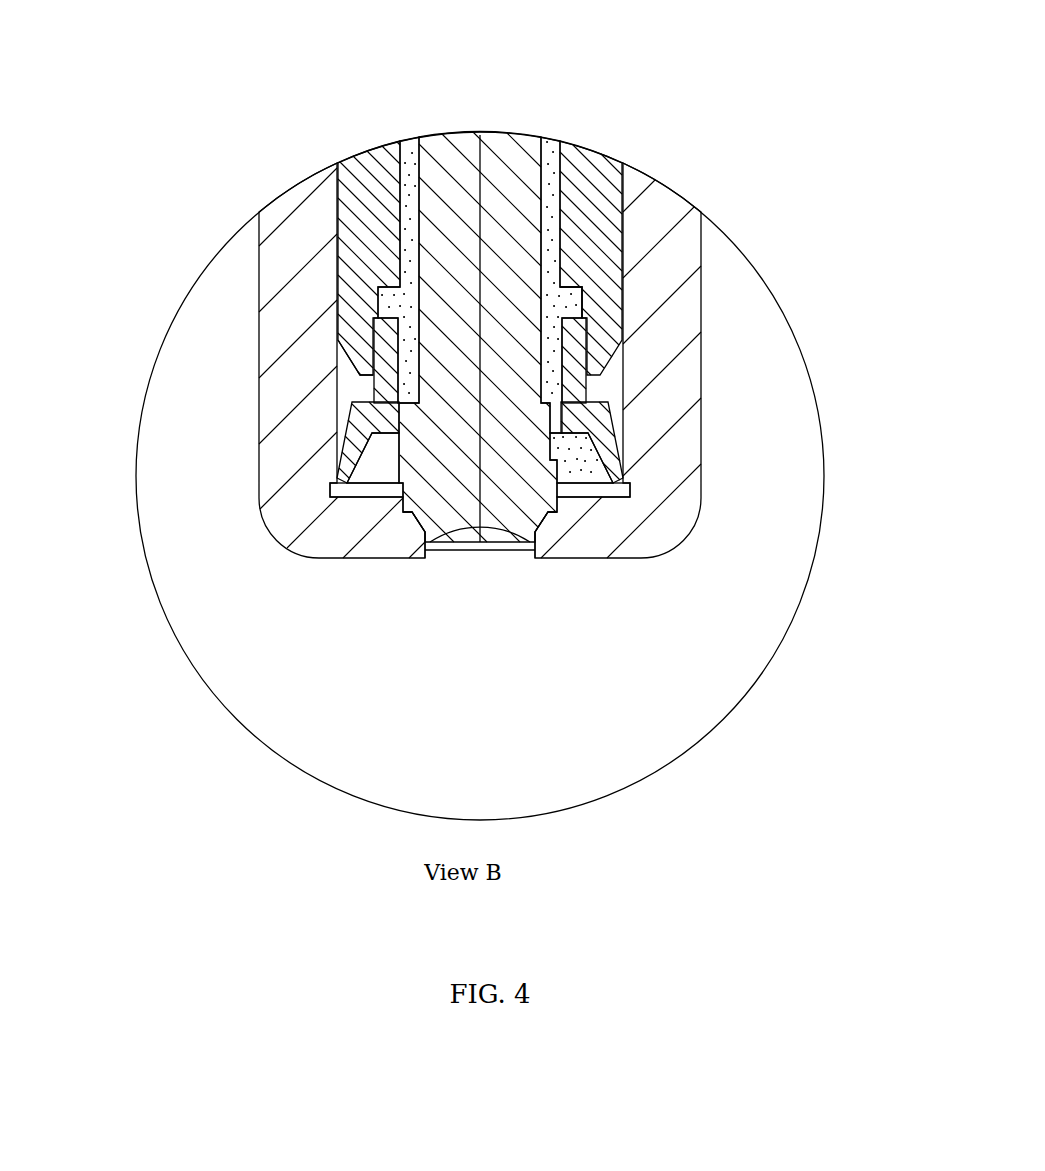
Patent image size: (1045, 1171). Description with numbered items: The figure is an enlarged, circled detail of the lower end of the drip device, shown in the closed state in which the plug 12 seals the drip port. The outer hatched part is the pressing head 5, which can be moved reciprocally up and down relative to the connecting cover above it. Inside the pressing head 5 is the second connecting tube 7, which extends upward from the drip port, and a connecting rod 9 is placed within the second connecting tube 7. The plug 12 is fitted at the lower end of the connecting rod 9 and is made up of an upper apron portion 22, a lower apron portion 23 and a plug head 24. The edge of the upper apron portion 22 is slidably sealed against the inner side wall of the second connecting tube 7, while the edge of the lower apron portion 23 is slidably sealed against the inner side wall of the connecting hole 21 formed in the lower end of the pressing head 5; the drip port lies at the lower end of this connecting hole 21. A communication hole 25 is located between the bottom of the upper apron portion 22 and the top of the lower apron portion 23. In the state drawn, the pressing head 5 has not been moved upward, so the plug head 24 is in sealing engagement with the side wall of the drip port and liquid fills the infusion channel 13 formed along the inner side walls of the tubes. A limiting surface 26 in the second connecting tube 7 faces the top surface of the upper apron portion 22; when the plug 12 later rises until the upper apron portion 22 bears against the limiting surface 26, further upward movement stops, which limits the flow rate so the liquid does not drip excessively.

The pressing head 5 is at (293, 397).
The second connecting tube 7 is at (365, 237).
The connecting rod 9 is at (468, 163).
The plug 12 is at (423, 513).
The infusion channel 13 is at (553, 217).
The connecting hole 21 is at (338, 365).
The upper apron portion 22 is at (603, 360).
The lower apron portion 23 is at (622, 470).
The plug head 24 is at (527, 548).
The communication hole 25 is at (560, 437).
The limiting surface 26 is at (583, 285).